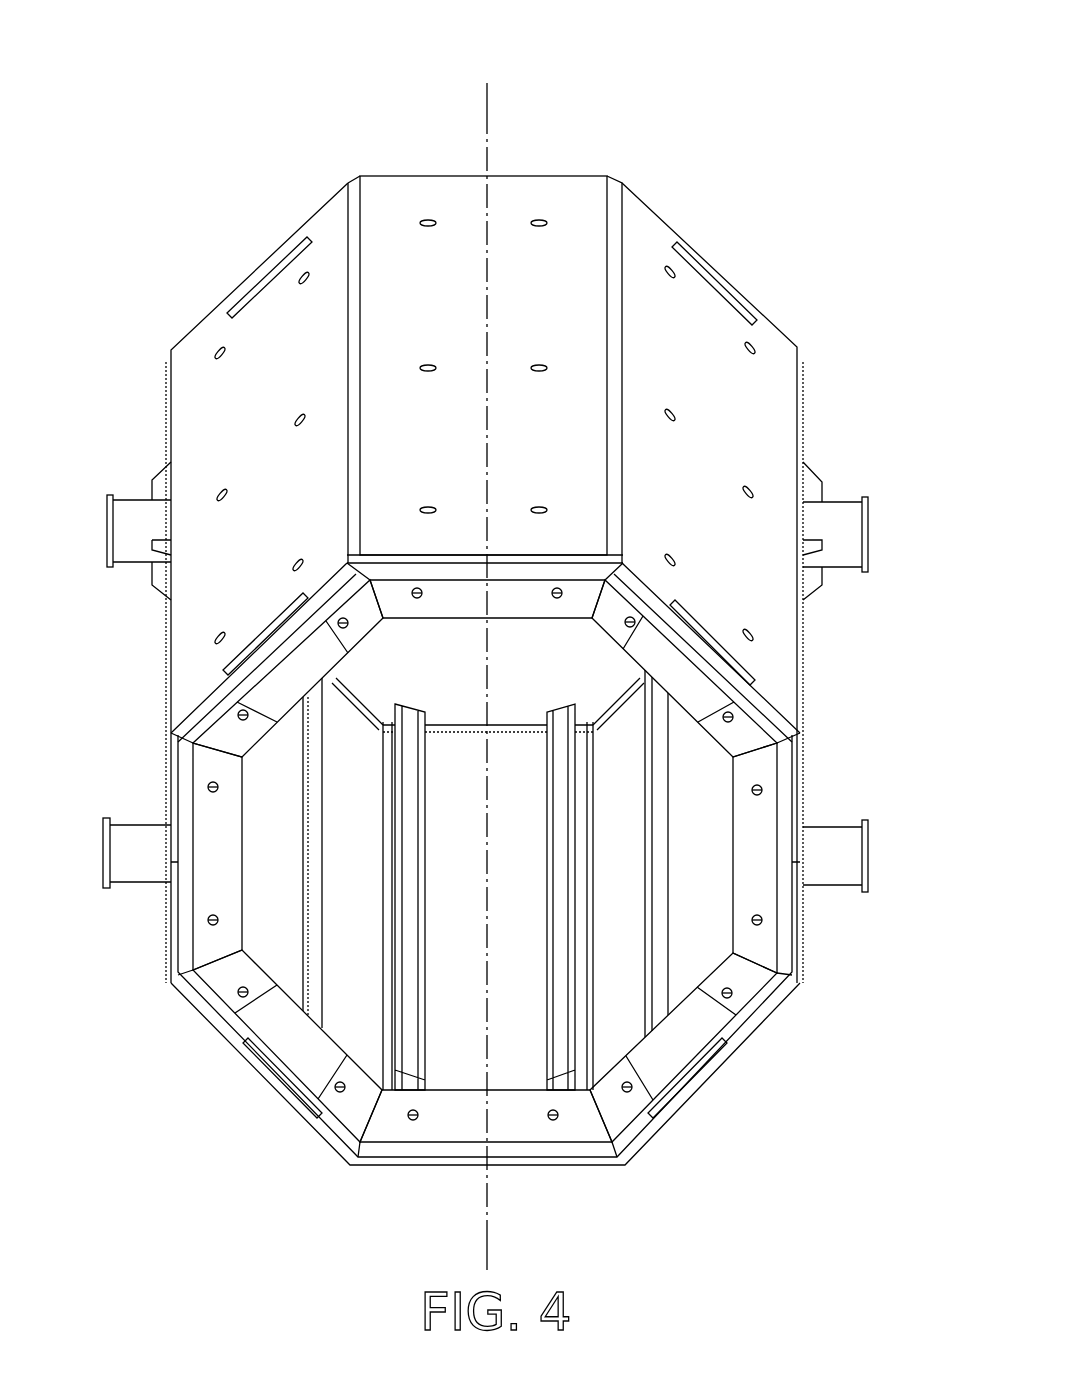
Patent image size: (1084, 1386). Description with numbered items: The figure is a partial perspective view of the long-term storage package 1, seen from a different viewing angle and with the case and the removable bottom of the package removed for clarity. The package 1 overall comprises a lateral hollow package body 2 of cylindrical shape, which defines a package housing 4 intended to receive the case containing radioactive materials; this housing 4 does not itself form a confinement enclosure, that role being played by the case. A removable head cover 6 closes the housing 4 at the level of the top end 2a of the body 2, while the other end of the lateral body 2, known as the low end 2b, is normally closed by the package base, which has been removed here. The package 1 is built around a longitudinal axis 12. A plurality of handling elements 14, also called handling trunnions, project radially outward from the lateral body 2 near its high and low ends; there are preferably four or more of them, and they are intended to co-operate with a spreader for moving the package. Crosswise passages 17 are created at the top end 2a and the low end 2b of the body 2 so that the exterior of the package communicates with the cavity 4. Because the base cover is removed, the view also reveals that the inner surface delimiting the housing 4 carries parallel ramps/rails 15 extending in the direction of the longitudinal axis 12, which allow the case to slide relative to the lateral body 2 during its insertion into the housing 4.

The long-term storage package 1 is at (268, 143).
The lateral hollow package body 2 is at (785, 413).
The top end 2a is at (790, 350).
The low end 2b is at (780, 672).
The package housing 4 is at (523, 845).
The removable head cover 6 is at (520, 640).
The longitudinal axis 12 is at (490, 95).
The handling elements 14 is at (135, 508).
The parallel ramps/rails 15 is at (408, 1048).
The crosswise passages 17 is at (257, 283).